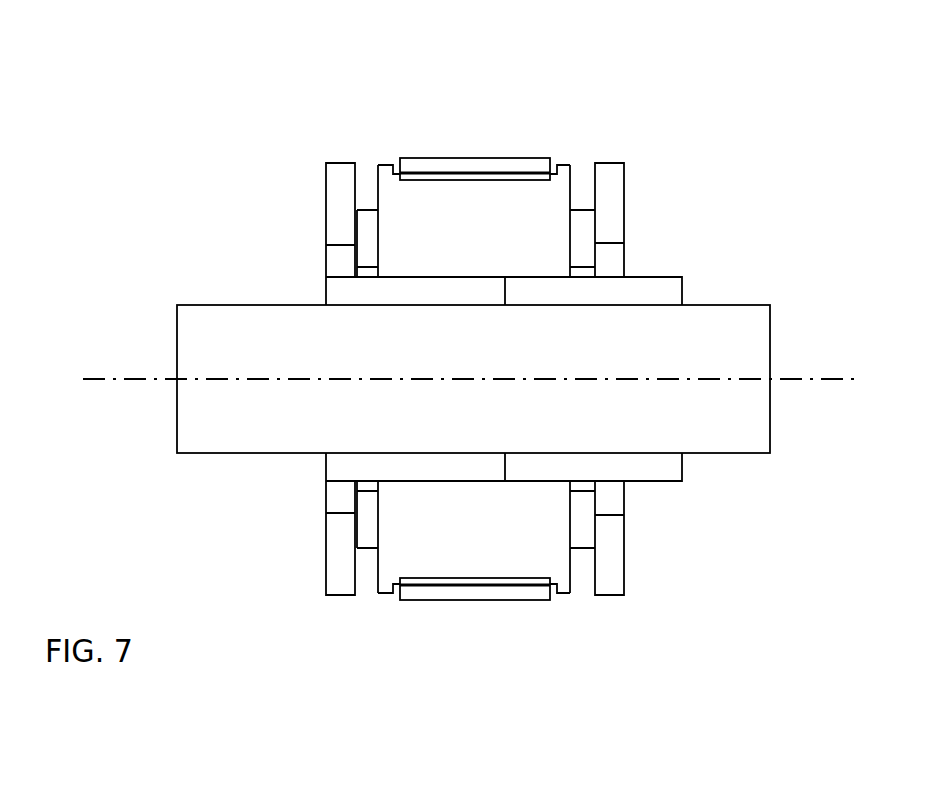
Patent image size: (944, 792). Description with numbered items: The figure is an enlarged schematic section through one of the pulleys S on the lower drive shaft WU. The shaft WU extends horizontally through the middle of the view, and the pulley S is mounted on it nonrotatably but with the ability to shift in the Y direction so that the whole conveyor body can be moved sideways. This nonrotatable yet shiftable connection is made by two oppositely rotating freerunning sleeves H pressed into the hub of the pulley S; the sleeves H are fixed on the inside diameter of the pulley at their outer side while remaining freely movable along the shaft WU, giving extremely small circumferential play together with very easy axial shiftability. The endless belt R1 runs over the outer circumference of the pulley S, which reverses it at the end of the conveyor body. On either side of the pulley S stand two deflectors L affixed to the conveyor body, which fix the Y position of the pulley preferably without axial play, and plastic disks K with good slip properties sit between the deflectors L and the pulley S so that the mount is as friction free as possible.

The deflector L is at (333, 205).
The plastic disk K is at (363, 227).
The endless belt R1 is at (500, 163).
The pulley S is at (467, 533).
The freerunning sleeve H is at (663, 288).
The lower drive shaft WU is at (697, 427).